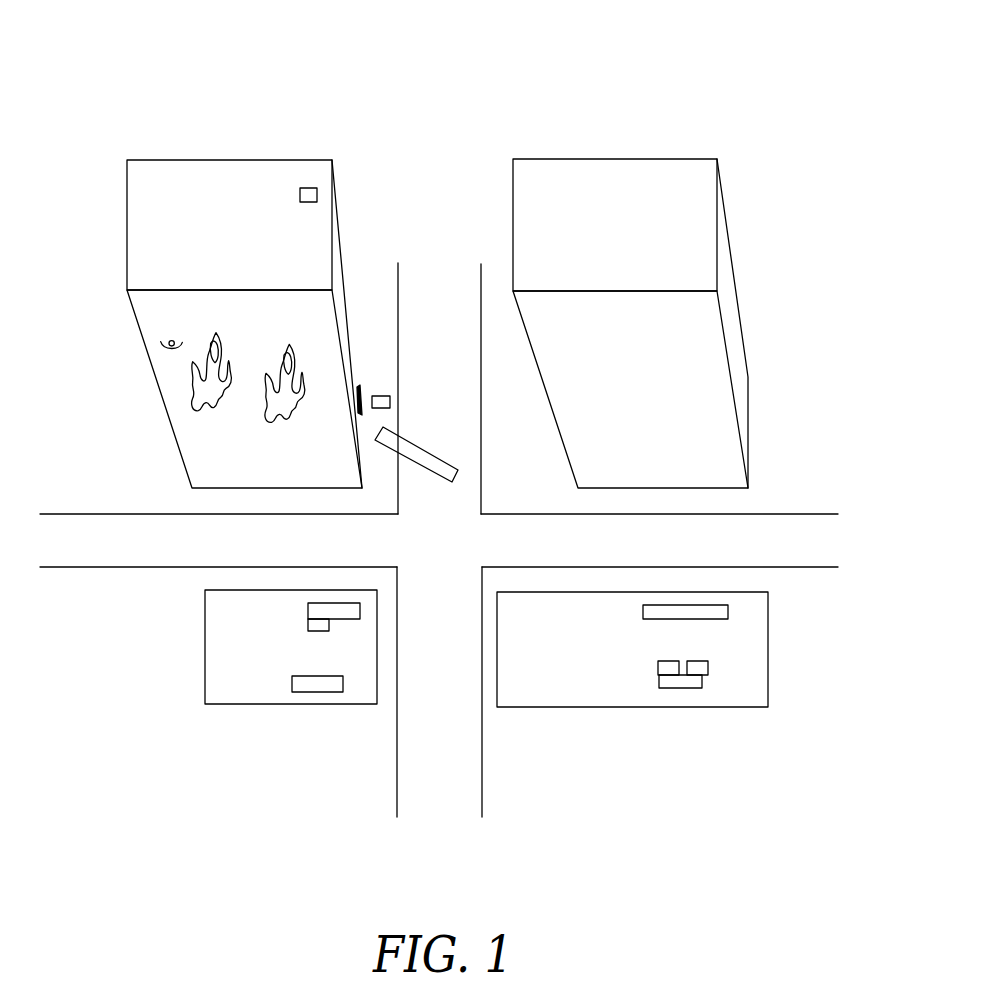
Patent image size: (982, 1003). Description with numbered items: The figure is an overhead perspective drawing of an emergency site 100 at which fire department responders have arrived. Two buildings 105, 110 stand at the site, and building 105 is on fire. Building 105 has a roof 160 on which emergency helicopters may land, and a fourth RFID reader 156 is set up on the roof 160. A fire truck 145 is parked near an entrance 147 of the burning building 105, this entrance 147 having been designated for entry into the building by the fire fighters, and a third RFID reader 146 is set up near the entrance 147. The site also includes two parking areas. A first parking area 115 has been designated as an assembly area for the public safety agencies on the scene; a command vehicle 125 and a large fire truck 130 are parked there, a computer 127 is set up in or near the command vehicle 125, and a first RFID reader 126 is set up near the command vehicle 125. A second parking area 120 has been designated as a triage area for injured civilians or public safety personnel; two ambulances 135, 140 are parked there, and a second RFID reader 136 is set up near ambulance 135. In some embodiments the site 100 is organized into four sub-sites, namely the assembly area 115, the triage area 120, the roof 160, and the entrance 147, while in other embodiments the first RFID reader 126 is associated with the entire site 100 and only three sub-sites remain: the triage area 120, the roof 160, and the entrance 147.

The emergency site 100 is at (72, 32).
The building 105 is at (142, 158).
The building 110 is at (528, 158).
The first parking area 115 is at (768, 648).
The second parking area 120 is at (205, 647).
The command vehicle 125 is at (659, 681).
The first RFID reader 126 is at (672, 660).
The computer 127 is at (697, 660).
The large fire truck 130 is at (643, 611).
The ambulance 135 is at (308, 609).
The second RFID reader 136 is at (313, 632).
The ambulance 140 is at (292, 683).
The fire truck 145 is at (436, 475).
The third RFID reader 146 is at (381, 395).
The entrance 147 is at (348, 287).
The fourth RFID reader 156 is at (307, 202).
The roof 160 is at (127, 225).